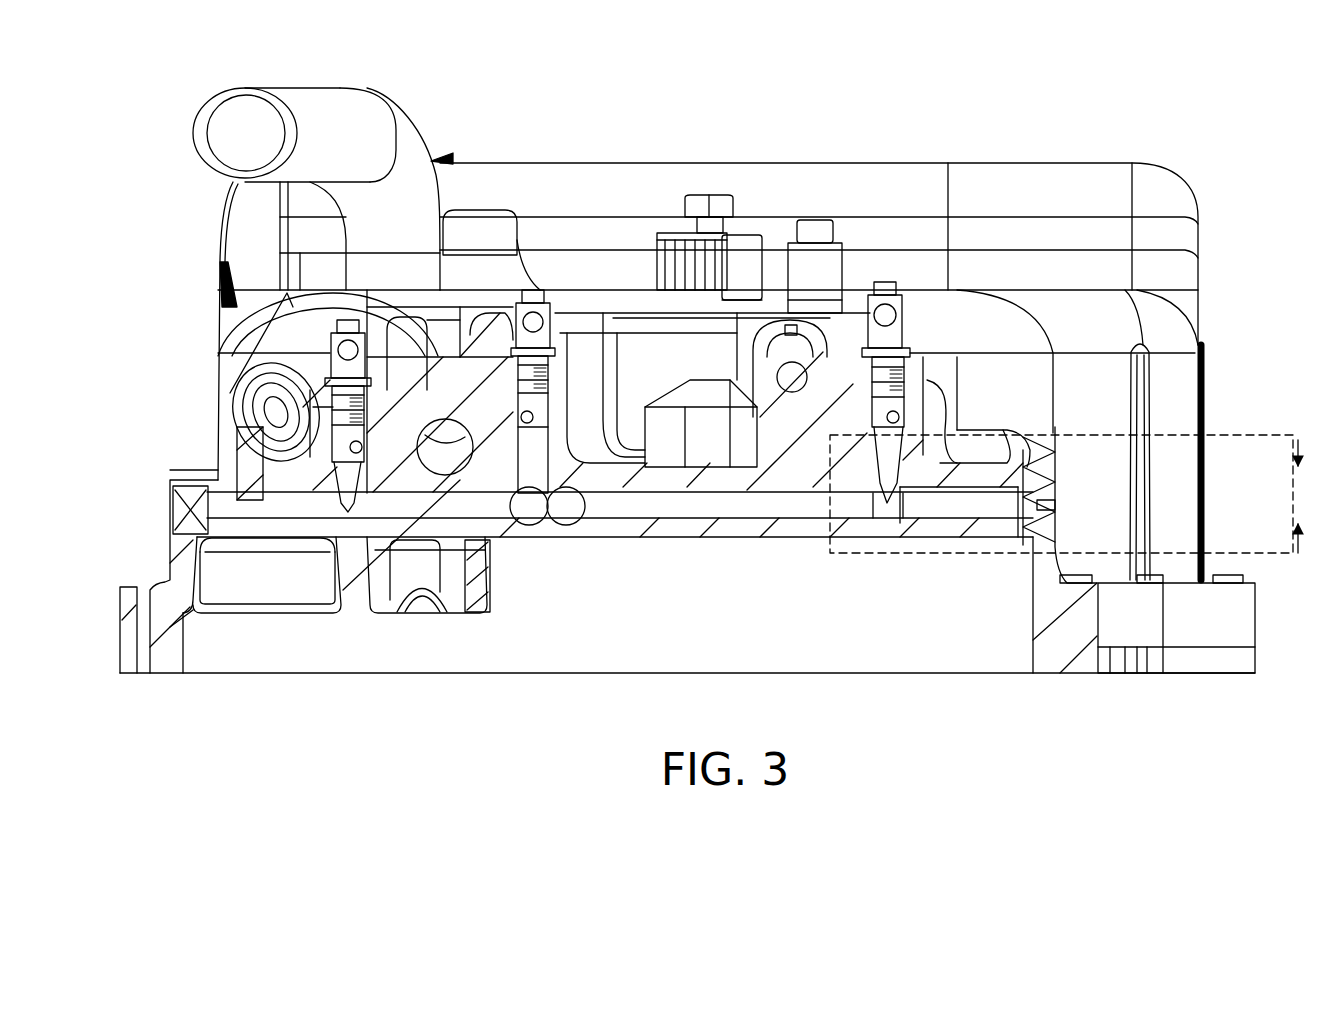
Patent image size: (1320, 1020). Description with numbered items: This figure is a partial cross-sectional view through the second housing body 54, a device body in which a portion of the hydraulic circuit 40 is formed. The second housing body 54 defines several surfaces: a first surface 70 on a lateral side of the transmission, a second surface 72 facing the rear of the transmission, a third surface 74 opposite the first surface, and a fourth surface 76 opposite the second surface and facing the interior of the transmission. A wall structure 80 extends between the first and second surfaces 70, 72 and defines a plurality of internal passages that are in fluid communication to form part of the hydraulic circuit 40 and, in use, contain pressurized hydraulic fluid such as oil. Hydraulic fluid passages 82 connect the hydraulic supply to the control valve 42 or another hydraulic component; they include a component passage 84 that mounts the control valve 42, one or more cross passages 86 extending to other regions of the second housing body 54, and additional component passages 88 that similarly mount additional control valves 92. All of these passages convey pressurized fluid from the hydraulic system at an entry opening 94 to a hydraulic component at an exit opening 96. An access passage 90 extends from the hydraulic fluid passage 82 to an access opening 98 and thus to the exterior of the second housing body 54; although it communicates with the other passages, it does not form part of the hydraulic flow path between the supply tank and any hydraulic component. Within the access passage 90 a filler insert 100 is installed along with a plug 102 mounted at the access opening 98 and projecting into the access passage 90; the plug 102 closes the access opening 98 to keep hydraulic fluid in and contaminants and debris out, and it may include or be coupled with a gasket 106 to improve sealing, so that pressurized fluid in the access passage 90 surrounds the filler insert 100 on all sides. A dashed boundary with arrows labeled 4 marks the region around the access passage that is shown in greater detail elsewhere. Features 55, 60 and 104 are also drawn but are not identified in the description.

The section line 4- 4 is at (1075, 494).
The hydraulic circuit 40 is at (597, 600).
The control valve 42 is at (914, 308).
The second housing body 54 is at (697, 334).
The base 55 is at (388, 660).
The sensor 60 is at (646, 264).
The first surface 70 is at (172, 545).
The second surface 72 is at (853, 290).
The third surface 74 is at (1060, 545).
The fourth surface 76 is at (706, 537).
The wall structure 80 is at (243, 528).
The hydraulic fluid passage 82 is at (492, 560).
The component passage 84 is at (880, 518).
The cross passage 86 is at (527, 513).
The additional component passage 88 is at (345, 500).
The access passage 90 is at (988, 496).
The additional control valve 92 is at (503, 316).
The entry opening 94 is at (173, 513).
The exit opening 96 is at (383, 310).
The access opening 98 is at (1052, 500).
The filler insert 100 is at (1062, 515).
The plug 102 is at (1035, 532).
The wall 104 is at (915, 520).
The gasket 106 is at (1023, 443).